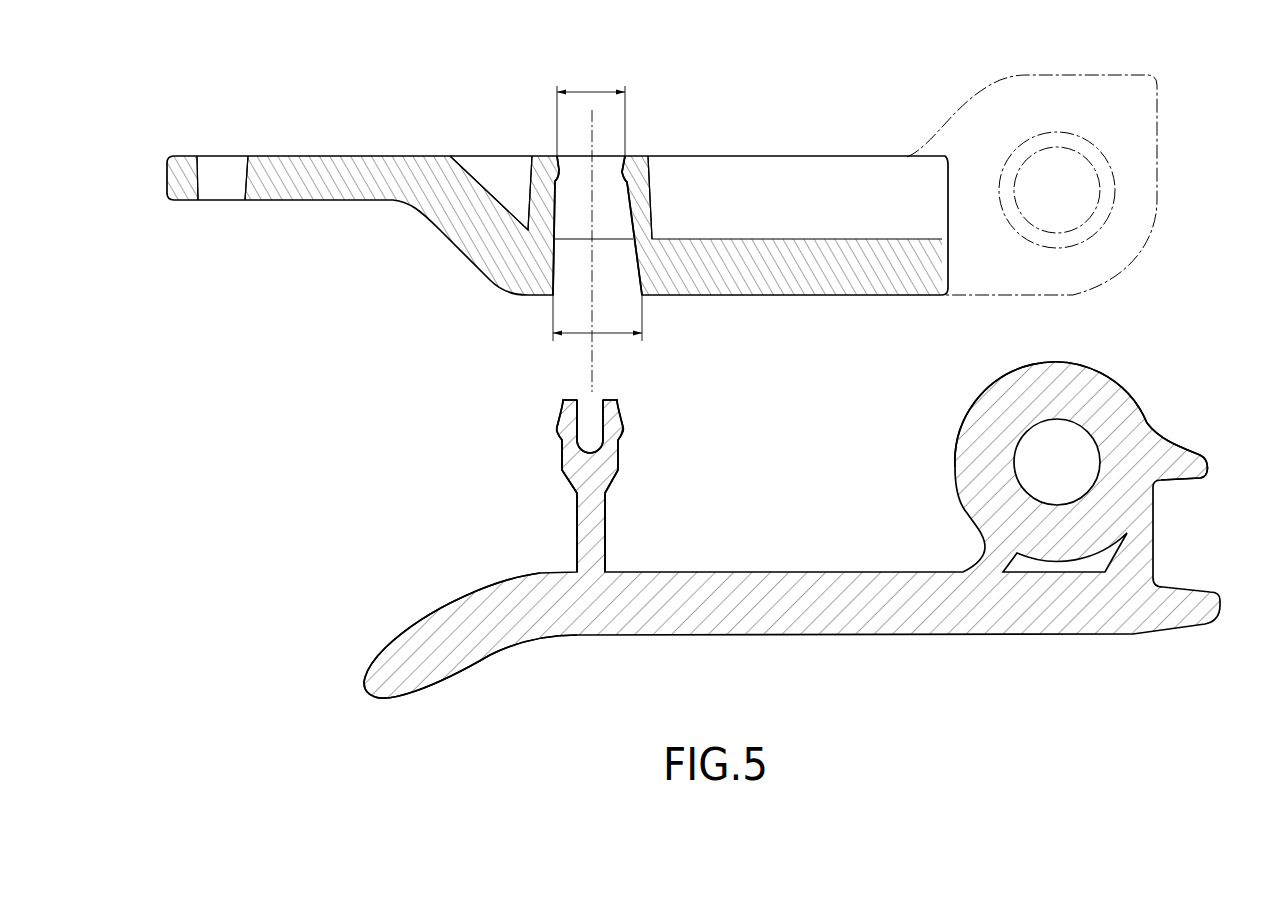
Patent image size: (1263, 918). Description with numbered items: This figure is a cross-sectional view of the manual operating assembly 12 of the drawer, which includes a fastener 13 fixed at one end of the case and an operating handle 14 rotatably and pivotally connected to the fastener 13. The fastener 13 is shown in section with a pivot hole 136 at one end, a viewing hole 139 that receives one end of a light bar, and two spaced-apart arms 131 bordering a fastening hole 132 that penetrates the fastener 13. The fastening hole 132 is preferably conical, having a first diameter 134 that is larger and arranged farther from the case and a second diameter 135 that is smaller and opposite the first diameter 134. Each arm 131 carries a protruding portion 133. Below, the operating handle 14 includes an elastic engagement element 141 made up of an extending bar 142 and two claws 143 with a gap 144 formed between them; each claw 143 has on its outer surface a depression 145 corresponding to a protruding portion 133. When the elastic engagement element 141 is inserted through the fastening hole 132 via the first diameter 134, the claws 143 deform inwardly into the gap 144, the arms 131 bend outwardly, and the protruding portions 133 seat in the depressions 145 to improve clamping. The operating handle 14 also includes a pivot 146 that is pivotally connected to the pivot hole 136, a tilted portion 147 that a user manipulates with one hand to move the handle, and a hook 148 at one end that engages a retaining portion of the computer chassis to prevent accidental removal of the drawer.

The manual operating assembly 12 is at (165, 410).
The fastener 13 is at (450, 273).
The operating handle 14 is at (408, 532).
The arms 131 is at (537, 192).
The fastening hole 132 is at (580, 175).
The protruding portion 133 is at (622, 175).
The first diameter 134 is at (597, 251).
The second diameter 135 is at (591, 108).
The pivot hole 136 is at (1047, 190).
The viewing hole 139 is at (220, 190).
The elastic engagement element 141 is at (613, 518).
The extending bar 142 is at (588, 532).
The claws 143 is at (567, 412).
The gap 144 is at (588, 410).
The depression 145 is at (560, 437).
The pivot 146 is at (1010, 417).
The tilted portion 147 is at (398, 647).
The hook 148 is at (1187, 463).